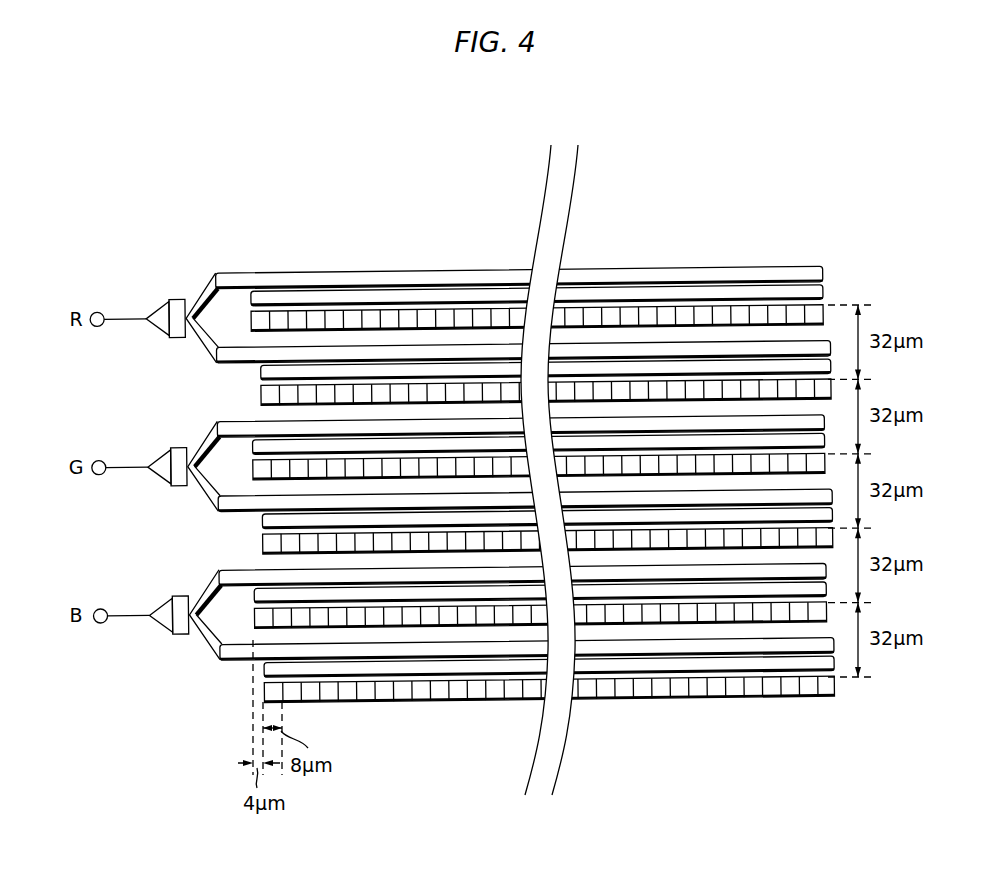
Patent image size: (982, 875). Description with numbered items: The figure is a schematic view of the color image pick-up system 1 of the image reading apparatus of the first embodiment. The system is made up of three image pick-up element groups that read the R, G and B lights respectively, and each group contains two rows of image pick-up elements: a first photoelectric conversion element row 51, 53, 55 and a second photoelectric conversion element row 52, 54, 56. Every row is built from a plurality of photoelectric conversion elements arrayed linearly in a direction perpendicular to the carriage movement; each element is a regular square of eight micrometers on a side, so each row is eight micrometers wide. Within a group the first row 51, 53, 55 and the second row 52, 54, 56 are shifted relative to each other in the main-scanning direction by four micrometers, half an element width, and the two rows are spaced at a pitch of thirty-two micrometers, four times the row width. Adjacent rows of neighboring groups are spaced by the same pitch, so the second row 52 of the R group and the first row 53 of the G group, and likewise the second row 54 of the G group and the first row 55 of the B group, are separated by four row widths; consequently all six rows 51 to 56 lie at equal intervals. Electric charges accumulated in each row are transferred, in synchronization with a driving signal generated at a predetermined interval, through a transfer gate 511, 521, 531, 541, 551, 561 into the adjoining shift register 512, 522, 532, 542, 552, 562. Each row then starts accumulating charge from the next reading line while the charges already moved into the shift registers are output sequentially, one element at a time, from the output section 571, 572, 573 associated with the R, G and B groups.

The color image pick-up system 1 is at (206, 229).
The first photoelectric conversion element row 51 is at (252, 320).
The transfer gate 511 is at (305, 293).
The shift register 512 is at (360, 277).
The second photoelectric conversion element row 52 is at (262, 396).
The transfer gate 521 is at (612, 365).
The shift register 522 is at (702, 348).
The first photoelectric conversion element row 53 is at (252, 468).
The transfer gate 531 is at (372, 444).
The shift register 532 is at (432, 417).
The second photoelectric conversion element row 54 is at (262, 544).
The transfer gate 541 is at (675, 518).
The shift register 542 is at (737, 500).
The first photoelectric conversion element row 55 is at (252, 616).
The transfer gate 551 is at (410, 592).
The shift register 552 is at (500, 575).
The second photoelectric conversion element row 56 is at (262, 692).
The transfer gate 561 is at (750, 665).
The shift register 562 is at (808, 652).
The output section 571 is at (158, 310).
The output section 572 is at (158, 458).
The output section 573 is at (158, 606).